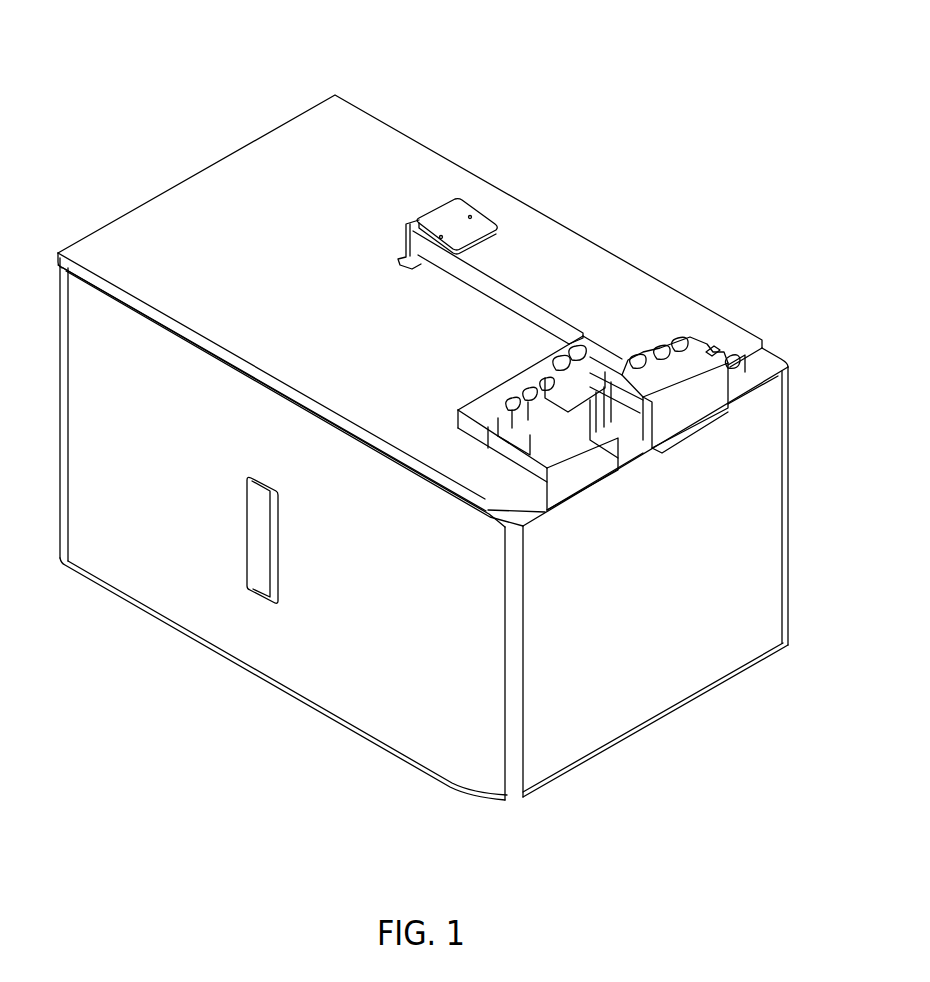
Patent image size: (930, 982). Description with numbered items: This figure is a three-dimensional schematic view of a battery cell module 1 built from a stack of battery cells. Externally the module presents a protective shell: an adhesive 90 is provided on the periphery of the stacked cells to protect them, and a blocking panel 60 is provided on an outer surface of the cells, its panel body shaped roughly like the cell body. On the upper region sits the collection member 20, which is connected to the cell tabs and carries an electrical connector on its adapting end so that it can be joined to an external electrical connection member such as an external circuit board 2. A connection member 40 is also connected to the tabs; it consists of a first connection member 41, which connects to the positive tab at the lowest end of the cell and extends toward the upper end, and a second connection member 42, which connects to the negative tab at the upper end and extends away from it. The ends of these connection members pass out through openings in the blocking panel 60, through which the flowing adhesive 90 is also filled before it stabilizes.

The battery cell module 1 is at (423, 419).
The external circuit board 2 is at (498, 258).
The collection member 20 is at (458, 212).
The connection member 40 is at (690, 228).
The first connection member 41 is at (567, 428).
The second connection member 42 is at (670, 370).
The blocking panel 60 is at (580, 253).
The adhesive 90 is at (623, 731).